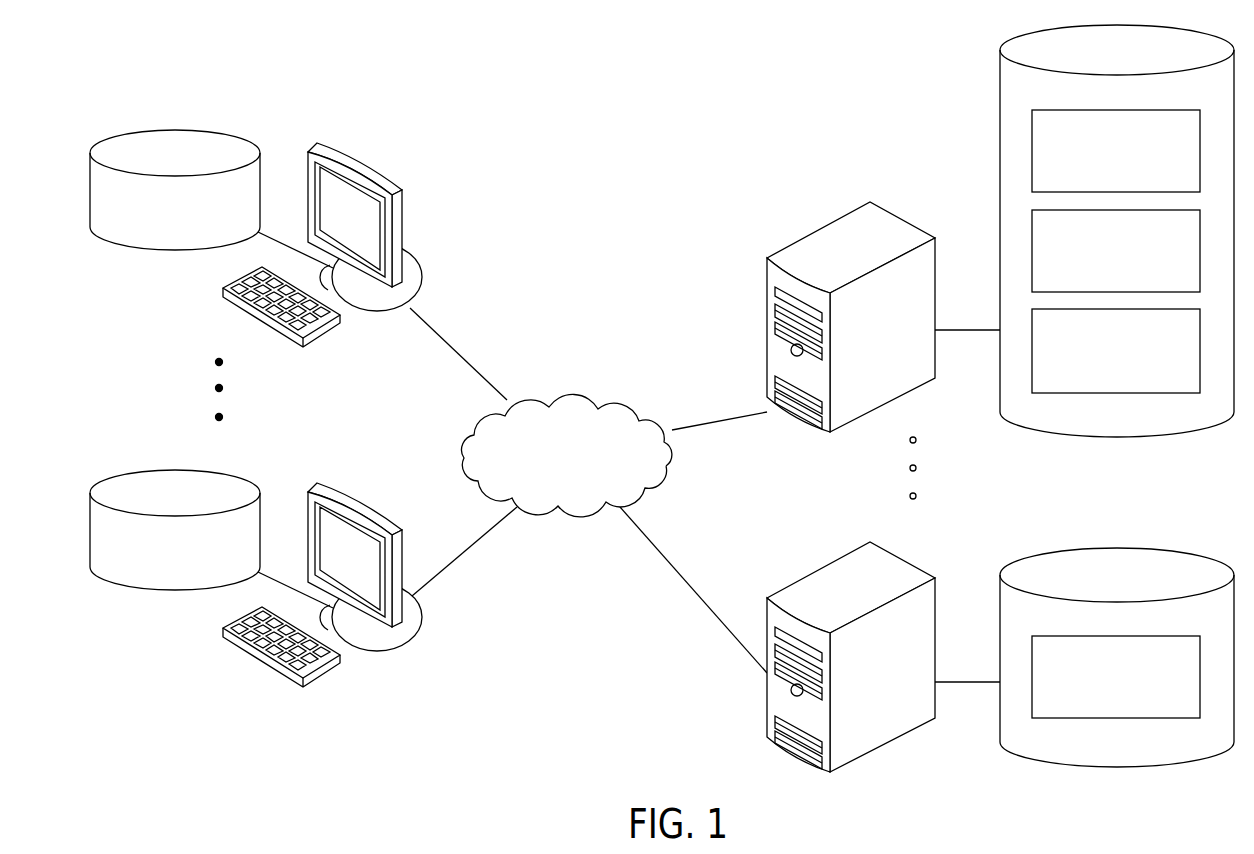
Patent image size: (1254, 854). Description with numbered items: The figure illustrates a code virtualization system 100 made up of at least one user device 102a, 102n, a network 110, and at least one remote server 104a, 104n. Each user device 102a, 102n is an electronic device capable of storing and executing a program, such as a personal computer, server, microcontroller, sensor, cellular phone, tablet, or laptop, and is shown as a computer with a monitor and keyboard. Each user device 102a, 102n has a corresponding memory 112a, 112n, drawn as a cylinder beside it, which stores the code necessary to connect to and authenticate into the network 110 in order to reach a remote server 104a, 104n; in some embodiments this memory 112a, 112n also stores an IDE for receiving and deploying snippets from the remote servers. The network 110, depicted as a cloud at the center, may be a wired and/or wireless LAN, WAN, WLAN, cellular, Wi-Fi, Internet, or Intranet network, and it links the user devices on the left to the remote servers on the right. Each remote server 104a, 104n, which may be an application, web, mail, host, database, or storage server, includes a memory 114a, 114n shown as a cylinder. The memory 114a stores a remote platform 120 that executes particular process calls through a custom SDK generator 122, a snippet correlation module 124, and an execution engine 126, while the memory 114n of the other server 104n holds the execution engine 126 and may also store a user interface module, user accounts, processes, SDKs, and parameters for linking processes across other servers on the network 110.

The code virtualization system 100 is at (444, 53).
The user device 102a is at (363, 162).
The user device 102n is at (322, 560).
The remote server 104a is at (817, 230).
The remote server 104n is at (851, 636).
The network 110 is at (573, 398).
The memory 112a is at (145, 129).
The memory 112n is at (145, 469).
The memory 114a is at (1067, 231).
The memory 114n is at (1117, 622).
The remote platform 120 is at (1095, 165).
The custom SDK generator 122 is at (1095, 266).
The snippet correlation module 124 is at (1095, 366).
The execution engine 126 is at (1095, 692).